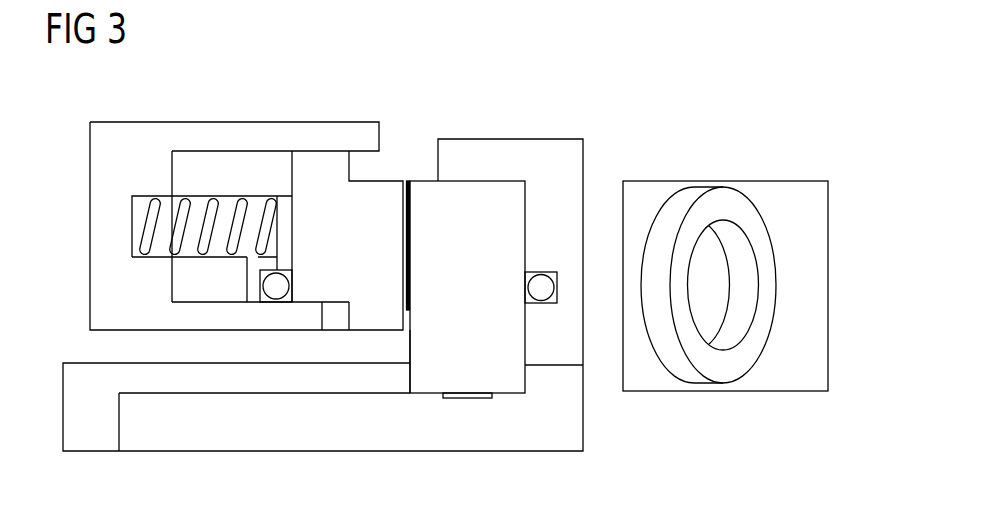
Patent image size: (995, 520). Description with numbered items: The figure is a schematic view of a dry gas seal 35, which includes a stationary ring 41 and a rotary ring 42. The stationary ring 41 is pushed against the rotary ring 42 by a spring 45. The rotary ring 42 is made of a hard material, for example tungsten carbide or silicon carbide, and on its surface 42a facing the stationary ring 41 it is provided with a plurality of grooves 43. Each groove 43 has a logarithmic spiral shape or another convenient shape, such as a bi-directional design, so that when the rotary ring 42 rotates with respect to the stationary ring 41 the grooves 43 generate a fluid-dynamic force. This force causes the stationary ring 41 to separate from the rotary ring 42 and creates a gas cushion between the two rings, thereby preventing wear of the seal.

The dry gas seal 35 is at (749, 109).
The stationary ring 41 is at (387, 201).
The rotary ring 42 is at (507, 384).
The surface 42a is at (409, 345).
The groove 43 is at (412, 213).
The spring 45 is at (147, 228).